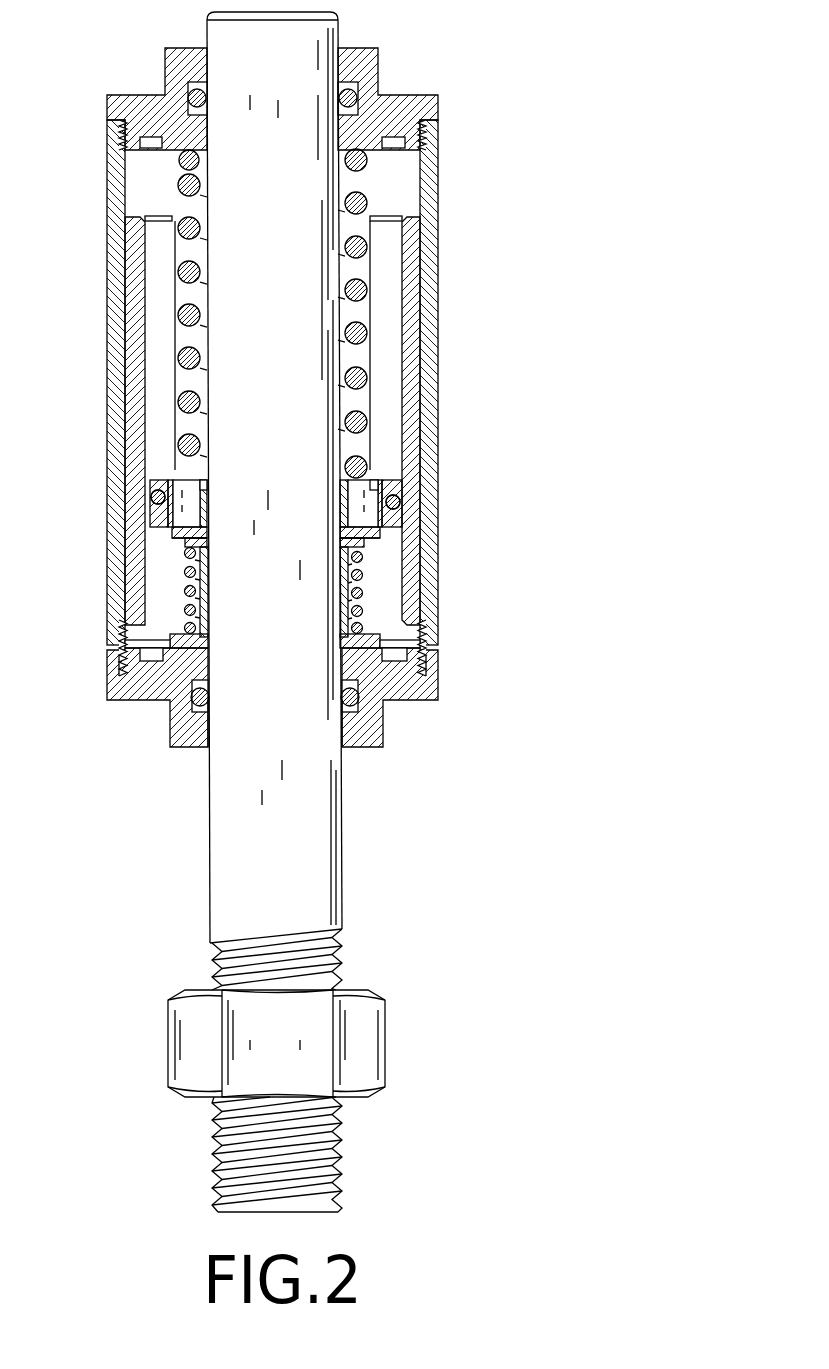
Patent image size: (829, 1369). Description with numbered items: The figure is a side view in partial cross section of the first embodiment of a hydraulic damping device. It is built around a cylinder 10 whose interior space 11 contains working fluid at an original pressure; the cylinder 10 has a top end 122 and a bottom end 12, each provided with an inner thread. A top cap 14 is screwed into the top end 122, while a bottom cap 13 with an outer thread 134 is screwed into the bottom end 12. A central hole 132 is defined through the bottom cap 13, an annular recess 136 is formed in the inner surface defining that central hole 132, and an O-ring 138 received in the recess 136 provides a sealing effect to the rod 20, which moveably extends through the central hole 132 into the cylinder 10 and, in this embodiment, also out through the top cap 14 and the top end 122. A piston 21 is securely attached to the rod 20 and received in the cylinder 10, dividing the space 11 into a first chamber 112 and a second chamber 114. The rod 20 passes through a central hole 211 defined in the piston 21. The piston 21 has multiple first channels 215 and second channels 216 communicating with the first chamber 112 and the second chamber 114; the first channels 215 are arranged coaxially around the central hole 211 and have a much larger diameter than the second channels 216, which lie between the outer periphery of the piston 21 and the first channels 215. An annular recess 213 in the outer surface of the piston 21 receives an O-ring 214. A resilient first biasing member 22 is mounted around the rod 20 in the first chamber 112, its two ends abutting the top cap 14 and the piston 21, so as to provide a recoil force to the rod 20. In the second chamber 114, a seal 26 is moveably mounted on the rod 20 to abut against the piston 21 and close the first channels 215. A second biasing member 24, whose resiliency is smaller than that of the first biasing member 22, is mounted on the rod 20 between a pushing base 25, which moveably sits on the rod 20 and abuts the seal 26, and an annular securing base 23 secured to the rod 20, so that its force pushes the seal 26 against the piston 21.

The cylinder 10 is at (442, 287).
The space 11 is at (160, 382).
The first chamber 112 is at (383, 383).
The second chamber 114 is at (382, 575).
The bottom end 12 is at (120, 634).
The top end 122 is at (121, 148).
The bottom cap 13 is at (395, 725).
The central hole 132 is at (344, 730).
The outer thread 134 is at (118, 666).
The annular recess 136 is at (196, 708).
The O-ring 138 is at (193, 697).
The top cap 14 is at (381, 65).
The rod 20 is at (352, 856).
The piston 21 is at (410, 485).
The central hole 211 is at (204, 503).
The annular recess 213 is at (155, 516).
The O-ring 214 is at (153, 503).
The first channels 215 is at (374, 480).
The second channels 216 is at (381, 534).
The first biasing member 22 is at (368, 247).
The annular securing base 23 is at (378, 639).
The second biasing member 24 is at (362, 600).
The pushing base 25 is at (172, 550).
The seal 26 is at (383, 548).